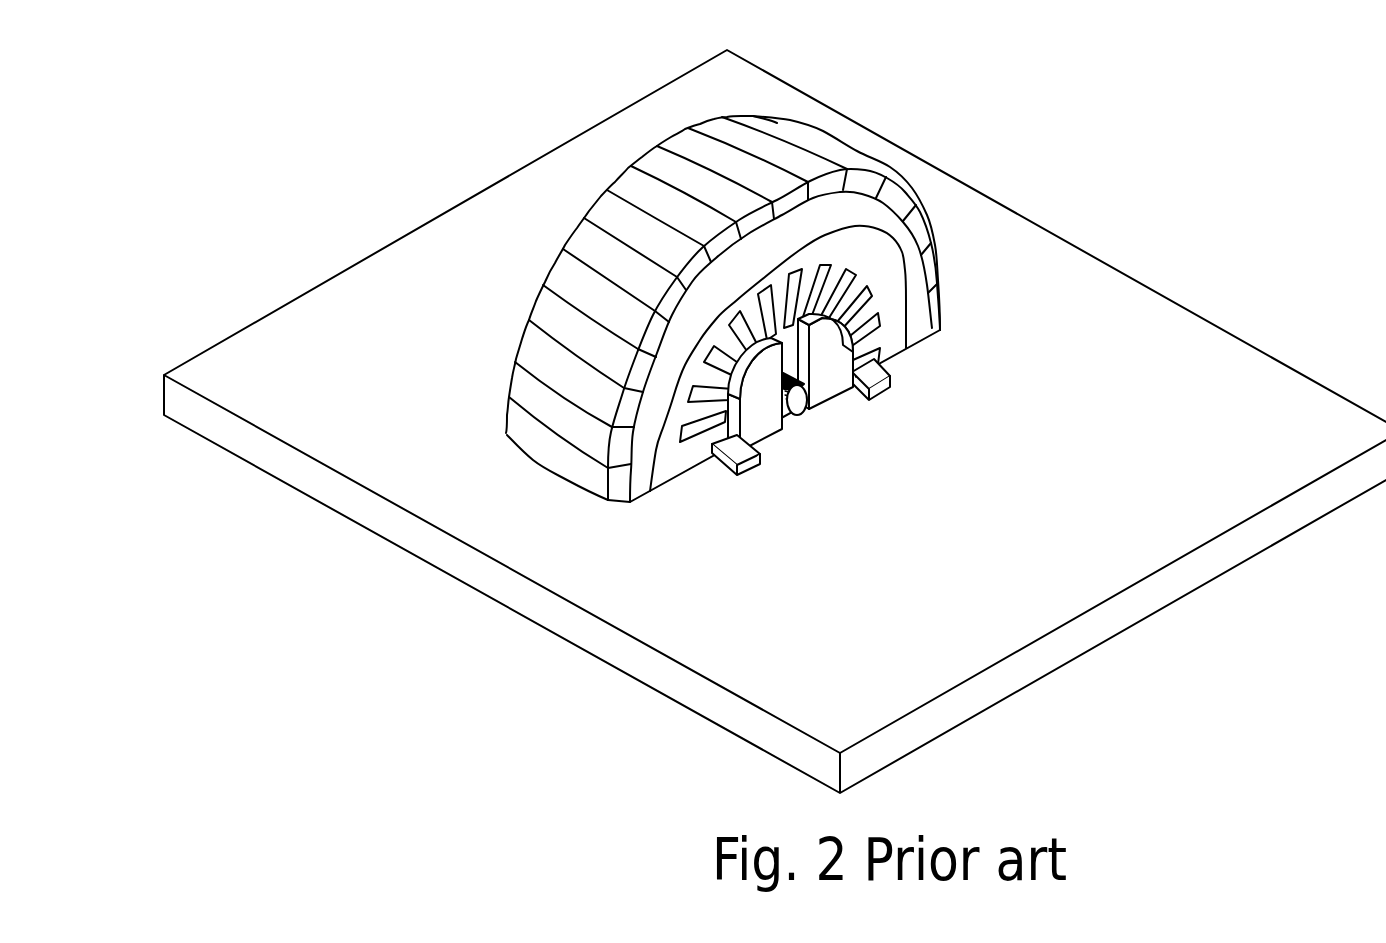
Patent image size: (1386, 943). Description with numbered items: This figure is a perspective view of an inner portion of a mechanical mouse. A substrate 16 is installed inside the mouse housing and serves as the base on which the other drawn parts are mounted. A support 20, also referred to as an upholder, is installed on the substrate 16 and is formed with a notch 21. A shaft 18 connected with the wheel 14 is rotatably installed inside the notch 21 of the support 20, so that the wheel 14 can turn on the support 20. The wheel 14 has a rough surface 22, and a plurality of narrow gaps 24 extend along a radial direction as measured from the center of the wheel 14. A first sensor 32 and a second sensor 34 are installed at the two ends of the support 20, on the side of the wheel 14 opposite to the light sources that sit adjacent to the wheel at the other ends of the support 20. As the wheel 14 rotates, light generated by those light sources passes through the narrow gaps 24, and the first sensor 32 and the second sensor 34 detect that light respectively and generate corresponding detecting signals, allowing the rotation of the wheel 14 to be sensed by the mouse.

The wheel 14 is at (771, 296).
The substrate 16 is at (1047, 492).
The shaft 18 is at (798, 408).
The support 20 is at (840, 382).
The notch 21 is at (788, 357).
The rough surface 22 is at (711, 143).
The narrow gaps 24 is at (840, 270).
The first sensor 32 is at (735, 463).
The second sensor 34 is at (880, 375).